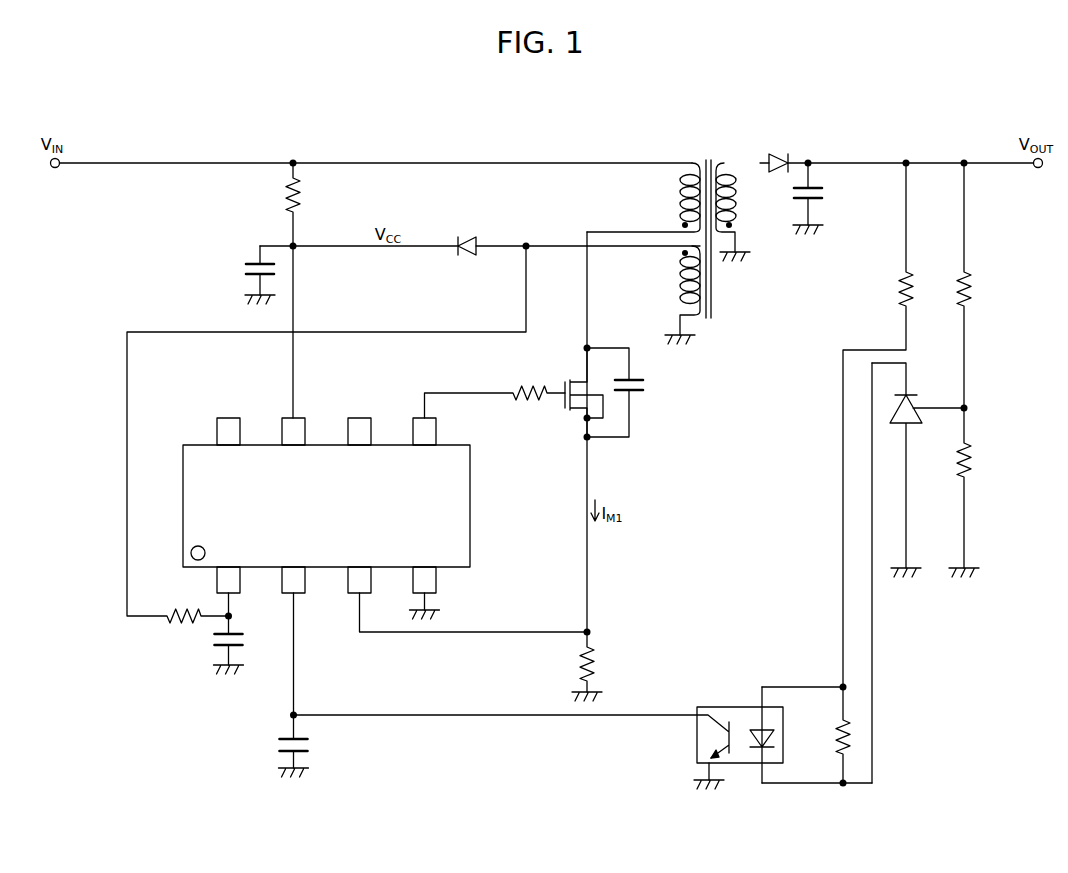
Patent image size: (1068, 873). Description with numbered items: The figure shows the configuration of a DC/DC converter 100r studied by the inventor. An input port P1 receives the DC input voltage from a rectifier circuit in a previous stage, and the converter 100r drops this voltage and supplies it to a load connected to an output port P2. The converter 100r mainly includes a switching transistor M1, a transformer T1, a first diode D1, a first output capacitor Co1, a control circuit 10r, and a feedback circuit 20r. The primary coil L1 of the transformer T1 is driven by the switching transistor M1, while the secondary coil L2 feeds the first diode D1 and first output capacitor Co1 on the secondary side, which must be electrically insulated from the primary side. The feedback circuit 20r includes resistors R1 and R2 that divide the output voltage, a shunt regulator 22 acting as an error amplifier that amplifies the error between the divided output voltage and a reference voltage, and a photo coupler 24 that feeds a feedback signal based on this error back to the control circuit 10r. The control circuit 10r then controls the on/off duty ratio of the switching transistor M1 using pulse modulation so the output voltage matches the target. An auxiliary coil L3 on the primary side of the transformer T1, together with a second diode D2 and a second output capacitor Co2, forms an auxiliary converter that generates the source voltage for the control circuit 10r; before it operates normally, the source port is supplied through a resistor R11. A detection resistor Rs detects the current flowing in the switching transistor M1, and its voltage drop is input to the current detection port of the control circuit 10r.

The DC/DC converter 100r is at (493, 832).
The control circuit 10r is at (472, 530).
The feedback circuit 20r is at (678, 798).
The shunt regulator 22 is at (912, 426).
The photo coupler 24 is at (696, 753).
The transformer T1 is at (668, 223).
The primary coil L1 is at (690, 160).
The secondary coil L2 is at (716, 160).
The auxiliary coil L3 is at (700, 320).
The first diode D1 is at (784, 152).
The second diode D2 is at (466, 258).
The first output capacitor Co1 is at (826, 193).
The second output capacitor Co2 is at (244, 270).
The resistor R11 is at (303, 197).
The resistor R1 is at (980, 288).
The resistor R2 is at (978, 462).
The detection resistor Rs is at (598, 655).
The switching transistor M1 is at (568, 412).
The input port P1 is at (55, 170).
The output port P2 is at (1038, 170).